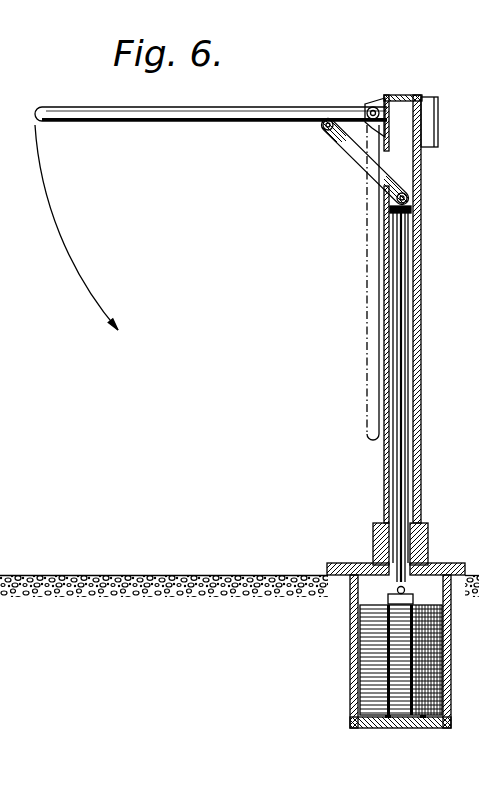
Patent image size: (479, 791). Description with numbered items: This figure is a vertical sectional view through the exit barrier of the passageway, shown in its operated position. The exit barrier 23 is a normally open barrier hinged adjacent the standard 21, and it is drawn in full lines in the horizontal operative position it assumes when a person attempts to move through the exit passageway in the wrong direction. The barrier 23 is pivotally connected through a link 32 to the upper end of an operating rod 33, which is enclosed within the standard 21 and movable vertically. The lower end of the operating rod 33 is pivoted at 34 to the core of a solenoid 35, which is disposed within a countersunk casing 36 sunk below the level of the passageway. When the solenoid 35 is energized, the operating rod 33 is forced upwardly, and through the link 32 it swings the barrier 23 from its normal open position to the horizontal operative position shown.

The standard 21 is at (390, 420).
The exit barrier 23 is at (197, 121).
The link 32 is at (350, 152).
The operating rod 33 is at (400, 295).
The pivot 34 is at (392, 588).
The solenoid 35 is at (385, 660).
The countersunk casing 36 is at (352, 685).